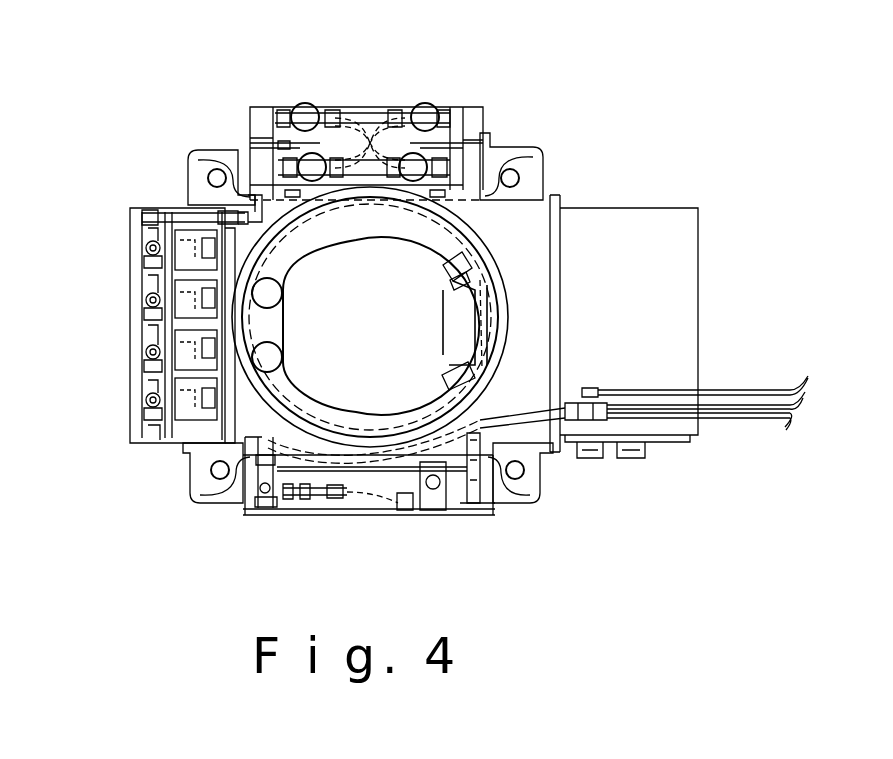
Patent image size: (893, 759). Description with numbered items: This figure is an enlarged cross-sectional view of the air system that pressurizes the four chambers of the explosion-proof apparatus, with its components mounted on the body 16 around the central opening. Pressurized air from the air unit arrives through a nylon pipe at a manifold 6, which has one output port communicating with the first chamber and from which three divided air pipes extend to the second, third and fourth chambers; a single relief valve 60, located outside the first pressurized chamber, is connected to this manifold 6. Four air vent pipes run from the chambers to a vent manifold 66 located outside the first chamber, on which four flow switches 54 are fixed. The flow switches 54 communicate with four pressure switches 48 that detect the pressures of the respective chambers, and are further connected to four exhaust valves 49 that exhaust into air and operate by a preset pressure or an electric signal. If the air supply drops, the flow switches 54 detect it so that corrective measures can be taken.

The main body plate 16 is at (495, 230).
The vent manifold 66 is at (452, 100).
The flow switches 54 is at (312, 172).
The pressure switches 48 is at (153, 215).
The exhaust valves 49 is at (146, 248).
The manifold 6 is at (270, 515).
The relief valve 60 is at (433, 503).